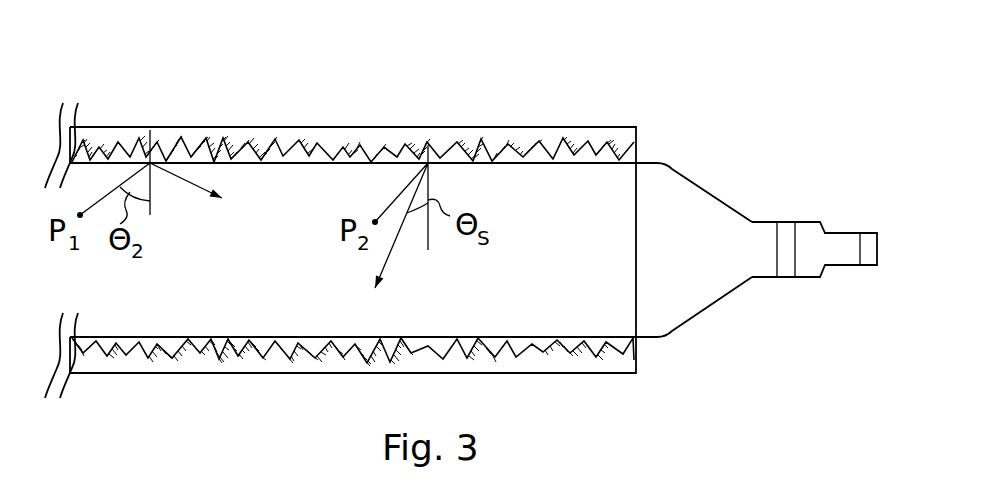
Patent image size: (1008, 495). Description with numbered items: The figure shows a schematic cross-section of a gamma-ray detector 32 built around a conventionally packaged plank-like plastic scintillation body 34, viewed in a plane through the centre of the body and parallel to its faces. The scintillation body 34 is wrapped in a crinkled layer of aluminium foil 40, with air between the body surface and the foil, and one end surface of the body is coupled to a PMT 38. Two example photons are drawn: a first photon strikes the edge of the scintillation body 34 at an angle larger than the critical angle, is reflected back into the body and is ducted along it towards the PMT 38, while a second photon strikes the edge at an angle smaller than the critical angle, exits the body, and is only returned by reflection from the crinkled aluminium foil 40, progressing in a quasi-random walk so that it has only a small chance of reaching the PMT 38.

The gamma-ray detector 32 is at (612, 68).
The plastic scintillation body 34 is at (625, 190).
The PMT 38 is at (715, 307).
The crinkled layer of aluminium foil 40 is at (330, 126).